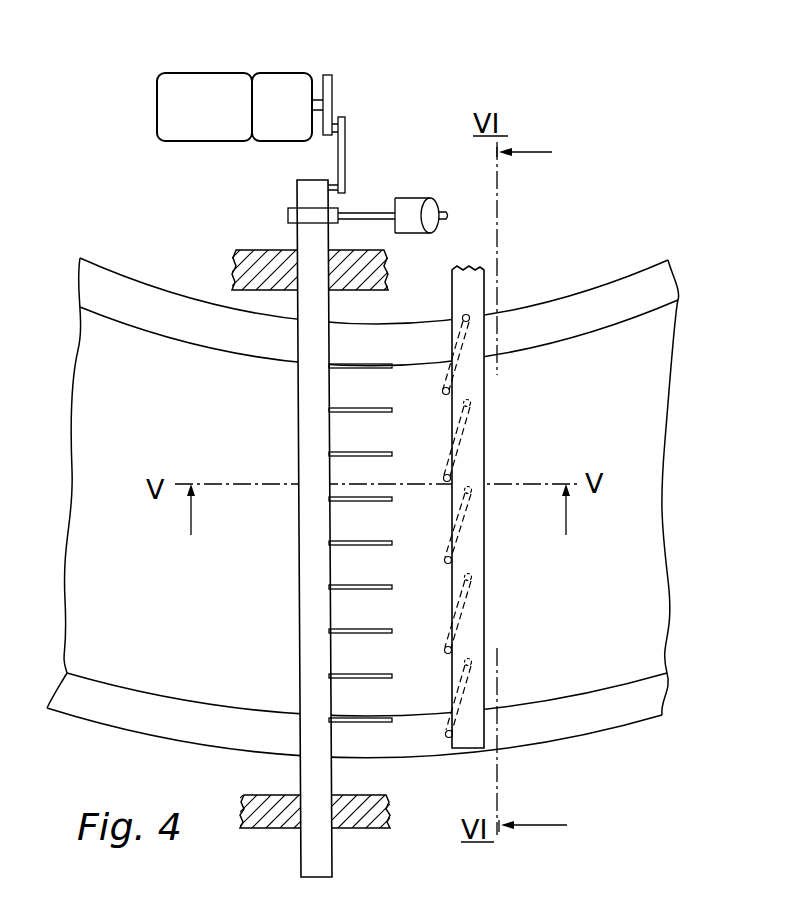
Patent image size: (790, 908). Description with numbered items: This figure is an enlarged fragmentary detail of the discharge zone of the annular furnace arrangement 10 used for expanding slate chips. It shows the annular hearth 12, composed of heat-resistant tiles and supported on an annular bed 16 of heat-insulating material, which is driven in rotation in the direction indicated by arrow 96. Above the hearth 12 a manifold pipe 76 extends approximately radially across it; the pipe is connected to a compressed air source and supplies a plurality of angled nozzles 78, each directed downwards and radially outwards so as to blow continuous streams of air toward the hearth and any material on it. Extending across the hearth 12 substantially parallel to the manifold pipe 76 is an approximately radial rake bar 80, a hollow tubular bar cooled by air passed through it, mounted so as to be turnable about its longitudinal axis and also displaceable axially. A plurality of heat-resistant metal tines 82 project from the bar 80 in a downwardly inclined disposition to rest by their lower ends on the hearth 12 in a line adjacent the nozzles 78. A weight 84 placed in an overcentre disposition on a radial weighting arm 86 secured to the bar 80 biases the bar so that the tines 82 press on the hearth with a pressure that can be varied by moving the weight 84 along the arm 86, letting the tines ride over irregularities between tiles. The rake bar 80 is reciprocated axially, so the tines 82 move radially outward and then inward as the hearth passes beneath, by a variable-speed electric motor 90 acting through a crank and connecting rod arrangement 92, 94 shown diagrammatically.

The annular furnace arrangement 10 is at (606, 276).
The annular hearth 12 is at (153, 380).
The annular bed of heat-insulating material 16 is at (548, 318).
The manifold pipe 76 is at (467, 286).
The angled nozzles 78 is at (445, 389).
The rake bar 80 is at (299, 587).
The tines 82 is at (348, 368).
The weight 84 is at (416, 198).
The radial weighting arm 86 is at (446, 219).
The variable-speed electric motor 90 is at (212, 88).
The crank 92 is at (333, 83).
The connecting rod 94 is at (345, 158).
The arrow indicating direction of hearth rotation 96 is at (677, 502).